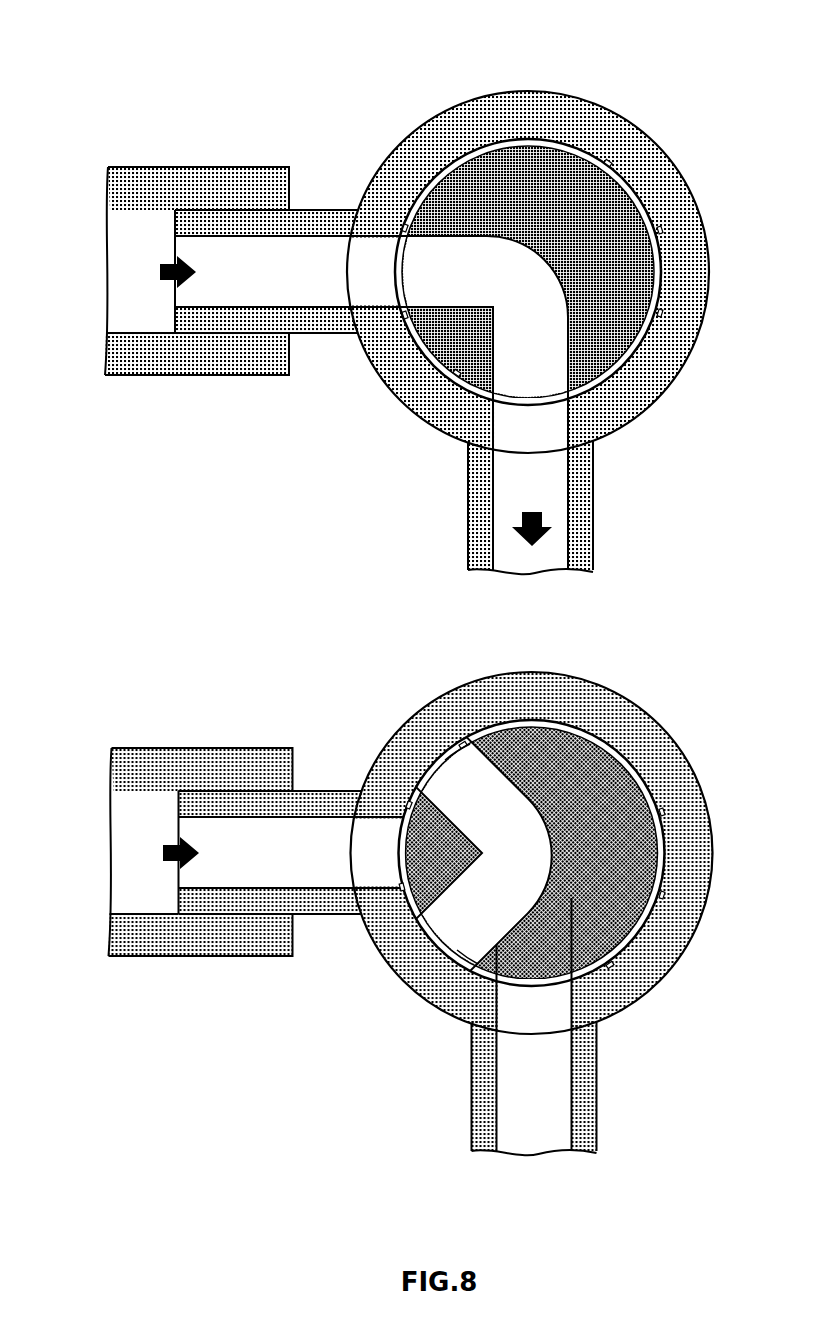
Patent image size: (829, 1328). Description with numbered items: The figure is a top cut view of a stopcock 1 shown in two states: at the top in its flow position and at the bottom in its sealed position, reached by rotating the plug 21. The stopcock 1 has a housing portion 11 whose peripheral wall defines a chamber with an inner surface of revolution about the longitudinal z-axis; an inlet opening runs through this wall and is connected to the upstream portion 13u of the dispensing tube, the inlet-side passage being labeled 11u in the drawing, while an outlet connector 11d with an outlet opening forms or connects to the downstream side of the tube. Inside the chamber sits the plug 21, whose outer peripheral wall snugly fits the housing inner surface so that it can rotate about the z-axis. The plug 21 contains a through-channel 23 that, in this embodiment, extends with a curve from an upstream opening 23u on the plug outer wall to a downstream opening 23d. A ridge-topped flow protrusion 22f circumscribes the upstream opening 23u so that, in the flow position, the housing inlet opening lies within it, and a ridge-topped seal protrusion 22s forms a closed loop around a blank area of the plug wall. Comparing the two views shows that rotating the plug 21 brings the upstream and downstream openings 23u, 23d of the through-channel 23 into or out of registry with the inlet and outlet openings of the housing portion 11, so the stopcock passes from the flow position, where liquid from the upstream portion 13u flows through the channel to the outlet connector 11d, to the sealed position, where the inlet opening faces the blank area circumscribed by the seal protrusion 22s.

The stopcock 1 is at (418, 603).
The housing portion 11 is at (431, 118).
The upstream flow path 11u is at (315, 210).
The outlet connector 11d is at (595, 515).
The upstream portion of the dispensing tube 13u is at (202, 167).
The plug 21 is at (558, 168).
The flow protrusion 22f is at (405, 318).
The seal protrusion 22s is at (401, 884).
The through-channel 23 is at (603, 285).
The upstream opening 23u is at (457, 770).
The downstream opening 23d is at (634, 920).